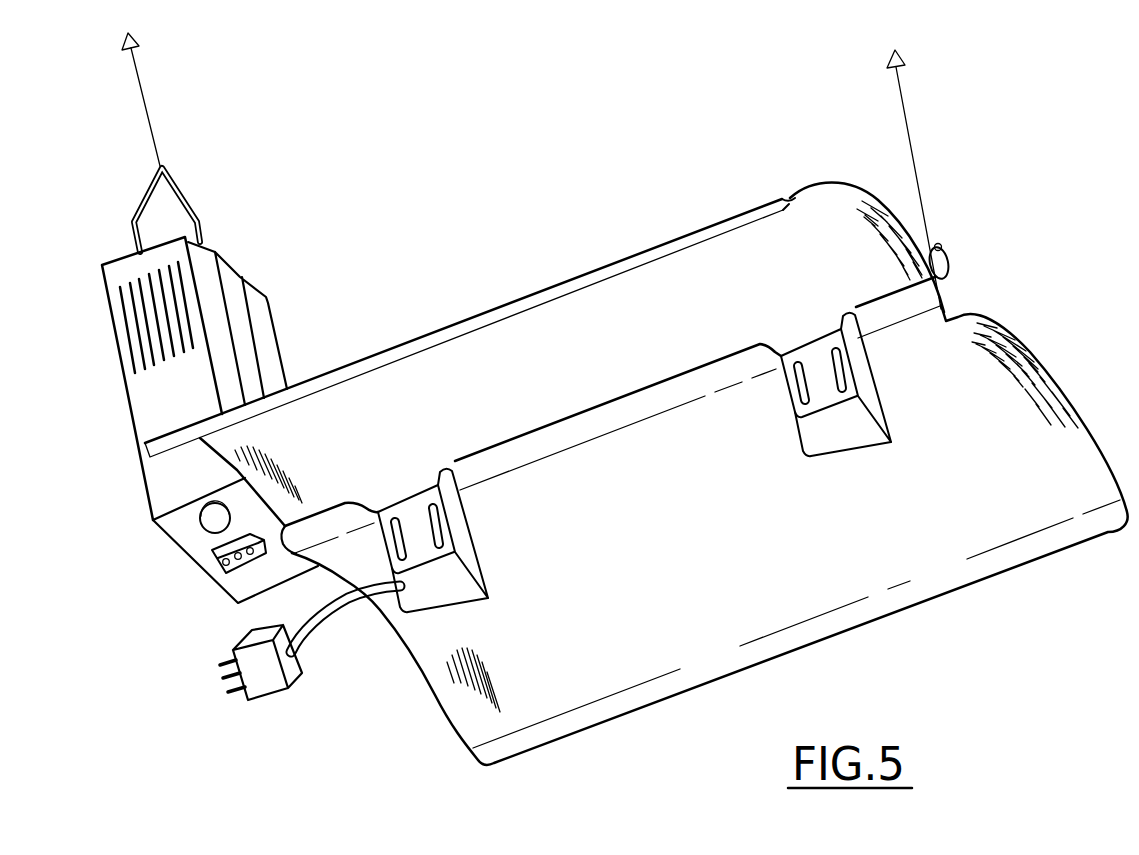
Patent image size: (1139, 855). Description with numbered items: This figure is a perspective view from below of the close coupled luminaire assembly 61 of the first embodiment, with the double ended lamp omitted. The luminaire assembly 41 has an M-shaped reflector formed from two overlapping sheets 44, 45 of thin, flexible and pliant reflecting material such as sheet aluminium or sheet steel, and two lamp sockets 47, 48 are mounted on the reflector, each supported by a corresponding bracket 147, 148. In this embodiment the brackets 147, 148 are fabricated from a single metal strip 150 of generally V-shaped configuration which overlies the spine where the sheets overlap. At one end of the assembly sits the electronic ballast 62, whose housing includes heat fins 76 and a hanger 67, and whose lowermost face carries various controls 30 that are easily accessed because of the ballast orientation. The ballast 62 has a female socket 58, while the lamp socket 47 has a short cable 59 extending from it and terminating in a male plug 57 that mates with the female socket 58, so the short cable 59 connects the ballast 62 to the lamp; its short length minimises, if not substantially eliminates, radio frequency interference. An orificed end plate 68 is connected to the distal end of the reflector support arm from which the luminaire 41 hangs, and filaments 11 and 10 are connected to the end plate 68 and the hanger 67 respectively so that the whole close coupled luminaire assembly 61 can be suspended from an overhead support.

The filament 10 is at (155, 143).
The filament 11 is at (930, 203).
The controls 30 is at (208, 525).
The luminaire assembly 41 is at (551, 263).
The reflector sheet 44 is at (820, 183).
The reflector sheet 45 is at (837, 582).
The lamp socket 47 is at (433, 607).
The lamp socket 48 is at (853, 450).
The male plug 57 is at (268, 683).
The female socket 58 is at (222, 565).
The short cable 59 is at (325, 612).
The close coupled luminaire assembly 61 is at (587, 402).
The electronic ballast 62 is at (138, 393).
The hanger 67 is at (188, 200).
The orificed end plate 68 is at (233, 283).
The heat fins 76 is at (125, 305).
The bracket 147 is at (418, 530).
The bracket 148 is at (823, 400).
The metal strip 150 is at (586, 423).